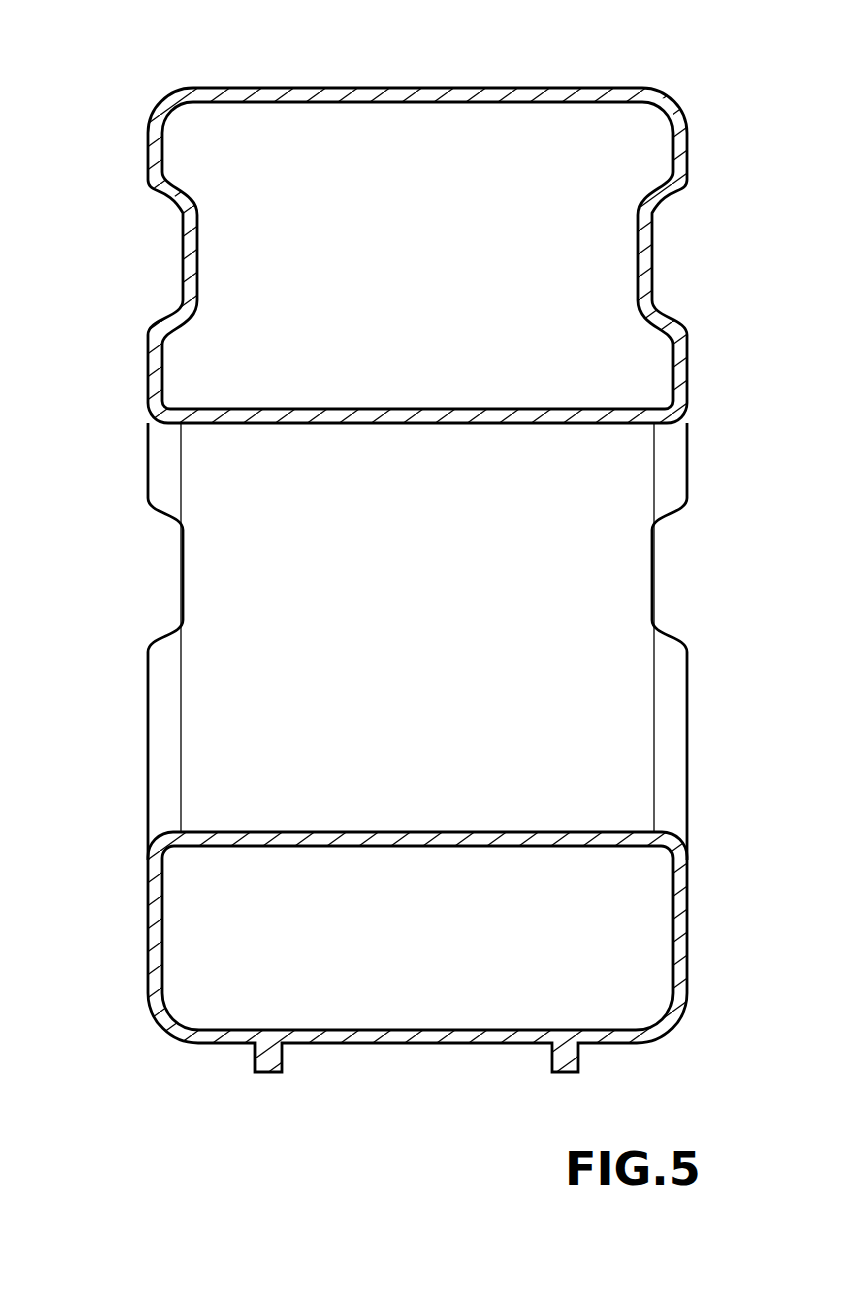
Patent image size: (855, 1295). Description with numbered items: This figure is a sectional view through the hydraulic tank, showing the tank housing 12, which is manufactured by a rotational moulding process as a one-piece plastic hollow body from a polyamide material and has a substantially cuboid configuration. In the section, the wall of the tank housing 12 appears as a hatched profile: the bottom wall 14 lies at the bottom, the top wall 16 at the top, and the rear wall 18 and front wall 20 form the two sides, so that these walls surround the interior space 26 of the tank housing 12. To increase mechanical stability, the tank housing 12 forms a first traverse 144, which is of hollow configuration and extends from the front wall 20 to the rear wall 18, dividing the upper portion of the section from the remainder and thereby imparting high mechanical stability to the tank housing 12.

The tank housing 12 is at (668, 92).
The bottom wall 14 is at (420, 1046).
The top wall 16 is at (441, 94).
The rear wall 18 is at (157, 375).
The front wall 20 is at (680, 375).
The interior space 26 is at (645, 886).
The first traverse 144 is at (293, 423).